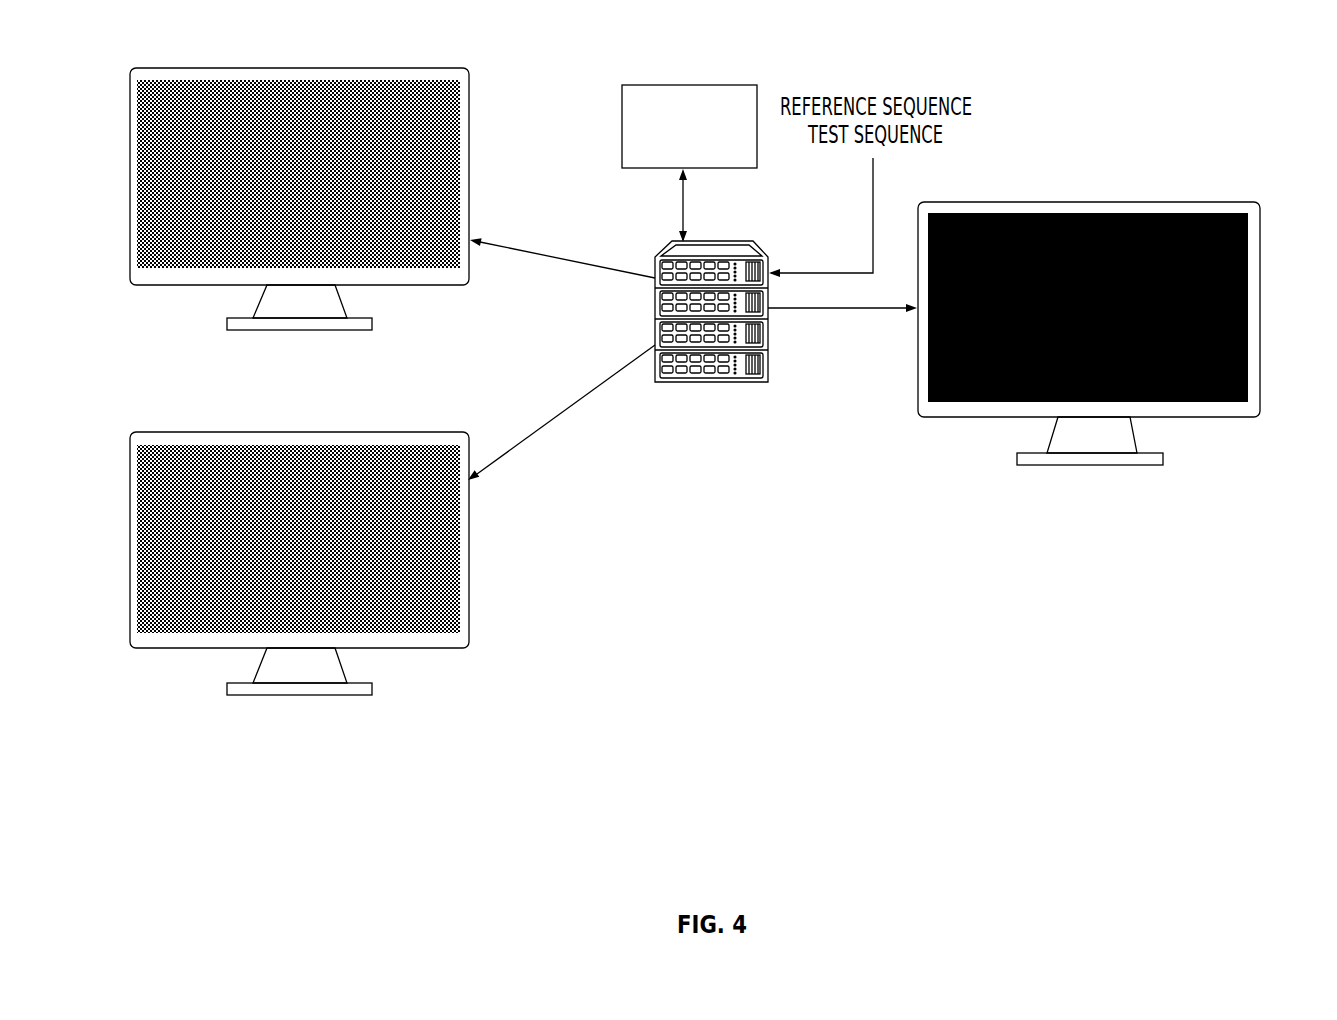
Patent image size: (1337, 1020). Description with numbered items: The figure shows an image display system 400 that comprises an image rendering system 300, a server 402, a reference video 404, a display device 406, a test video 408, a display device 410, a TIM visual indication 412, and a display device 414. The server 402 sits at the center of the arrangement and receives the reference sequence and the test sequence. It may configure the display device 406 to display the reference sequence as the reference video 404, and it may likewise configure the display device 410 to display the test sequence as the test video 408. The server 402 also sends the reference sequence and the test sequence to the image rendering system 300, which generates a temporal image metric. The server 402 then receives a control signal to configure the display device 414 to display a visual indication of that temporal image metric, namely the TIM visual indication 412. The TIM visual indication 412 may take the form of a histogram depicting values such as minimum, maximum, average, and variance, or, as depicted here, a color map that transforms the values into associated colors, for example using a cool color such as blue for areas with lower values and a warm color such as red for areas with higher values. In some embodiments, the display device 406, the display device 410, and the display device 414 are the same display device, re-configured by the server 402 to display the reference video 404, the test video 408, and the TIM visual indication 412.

The image rendering system 300 is at (707, 141).
The image display system 400 is at (1230, 78).
The server 402 is at (762, 422).
The reference video 404 is at (350, 52).
The display device 406 is at (331, 178).
The test video 408 is at (453, 607).
The display device 410 is at (337, 542).
The TIM visual indication 412 is at (1233, 395).
The display device 414 is at (1106, 313).